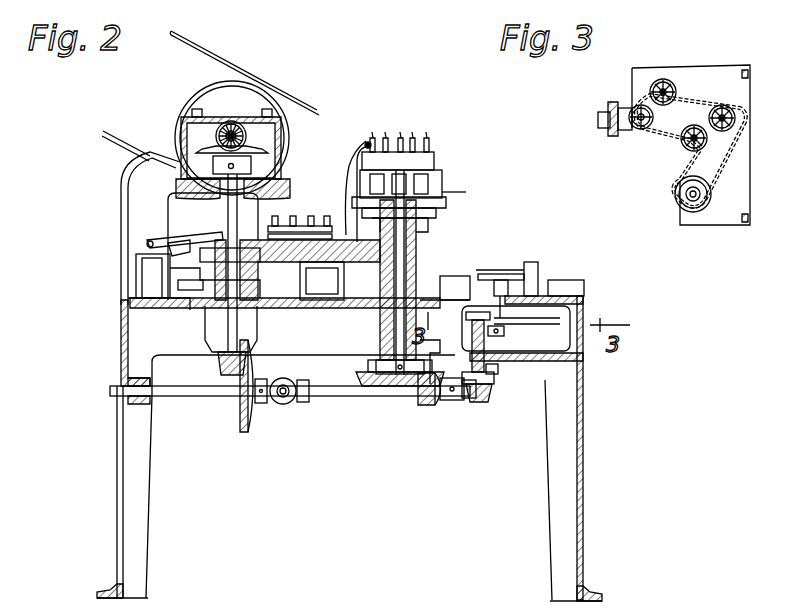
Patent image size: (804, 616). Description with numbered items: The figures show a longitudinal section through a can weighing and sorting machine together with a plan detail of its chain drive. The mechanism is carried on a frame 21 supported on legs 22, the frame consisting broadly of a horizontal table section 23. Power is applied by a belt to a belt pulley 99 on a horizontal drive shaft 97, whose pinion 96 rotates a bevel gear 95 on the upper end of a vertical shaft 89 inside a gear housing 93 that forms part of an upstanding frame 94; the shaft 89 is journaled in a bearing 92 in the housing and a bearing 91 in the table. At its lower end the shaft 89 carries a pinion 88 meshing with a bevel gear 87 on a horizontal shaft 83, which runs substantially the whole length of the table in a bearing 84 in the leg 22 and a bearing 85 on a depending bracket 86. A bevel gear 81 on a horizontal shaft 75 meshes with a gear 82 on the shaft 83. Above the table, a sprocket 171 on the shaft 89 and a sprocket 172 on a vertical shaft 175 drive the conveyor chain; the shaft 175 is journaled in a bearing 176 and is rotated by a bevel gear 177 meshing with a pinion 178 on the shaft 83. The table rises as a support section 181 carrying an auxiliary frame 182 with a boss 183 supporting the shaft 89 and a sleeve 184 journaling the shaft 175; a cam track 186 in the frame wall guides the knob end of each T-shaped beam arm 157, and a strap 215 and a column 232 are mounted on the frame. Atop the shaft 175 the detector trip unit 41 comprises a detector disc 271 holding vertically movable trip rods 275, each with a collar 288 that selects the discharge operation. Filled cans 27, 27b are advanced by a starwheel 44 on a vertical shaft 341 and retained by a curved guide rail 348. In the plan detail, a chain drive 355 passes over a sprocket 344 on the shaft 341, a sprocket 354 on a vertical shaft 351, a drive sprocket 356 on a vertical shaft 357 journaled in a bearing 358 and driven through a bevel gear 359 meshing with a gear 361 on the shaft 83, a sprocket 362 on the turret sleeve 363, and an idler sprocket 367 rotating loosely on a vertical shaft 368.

In FIG. 2, the belt pulley 99 is at (212, 86).
In FIG. 2, the horizontal drive shaft 97 is at (232, 128).
In FIG. 2, the pinion 96 is at (220, 135).
In FIG. 2, the bevel gear 95 is at (213, 164).
In FIG. 2, the gear housing 93 is at (280, 132).
In FIG. 2, the frame 94 is at (122, 178).
In FIG. 2, the bearing 92 is at (262, 188).
In FIG. 2, the vertical shaft 89 is at (226, 213).
In FIG. 2, the boss 183 is at (248, 245).
In FIG. 2, the strap 215 is at (312, 224).
In FIG. 2, the auxiliary frame 182 is at (336, 258).
In FIG. 2, the support section 181 is at (320, 282).
In FIG. 2, the horizontal table section 23 is at (350, 308).
In FIG. 2, the frame 21 is at (122, 338).
In FIG. 3, the frame 21 is at (648, 68).
In FIG. 2, the legs 22 is at (117, 492).
In FIG. 2, the T-shaped arm 157 is at (160, 246).
In FIG. 2, the filled can 27 is at (136, 268).
In FIG. 2, the sprocket 171 is at (208, 276).
In FIG. 2, the bearing 91 is at (222, 326).
In FIG. 2, the pinion 88 is at (218, 364).
In FIG. 2, the bevel gear 87 is at (240, 420).
In FIG. 2, the horizontal shaft 83 is at (190, 396).
In FIG. 2, the bearing 84 is at (140, 405).
In FIG. 2, the bevel gear 82 is at (300, 385).
In FIG. 2, the bevel gear 81 is at (276, 405).
In FIG. 2, the horizontal shaft 75 is at (283, 384).
In FIG. 2, the bearing 176 is at (384, 342).
In FIG. 2, the vertical shaft 175 is at (416, 213).
In FIG. 2, the sleeve 184 is at (416, 228).
In FIG. 2, the cam track 186 is at (418, 246).
In FIG. 2, the detector disc 271 is at (434, 162).
In FIG. 2, the trip rod 275 is at (404, 150).
In FIG. 2, the collar 288 is at (442, 180).
In FIG. 2, the column 232 is at (350, 146).
In FIG. 2, the detector trip unit 41 is at (400, 140).
In FIG. 2, the sprocket 172 is at (436, 294).
In FIG. 2, the starwheel 44 is at (484, 270).
In FIG. 2, the vertical shaft 341 is at (500, 272).
In FIG. 3, the vertical shaft 341 is at (666, 80).
In FIG. 2, the filled can 27b is at (538, 270).
In FIG. 2, the curved guide rail 348 is at (568, 280).
In FIG. 2, the third drive sprocket 356 is at (478, 318).
In FIG. 3, the third drive sprocket 356 is at (644, 130).
In FIG. 2, the vertical shaft 357 is at (492, 362).
In FIG. 3, the vertical shaft 357 is at (636, 126).
In FIG. 2, the bearing 358 is at (494, 376).
In FIG. 2, the bevel gear 359 is at (482, 400).
In FIG. 2, the bracket 86 is at (446, 366).
In FIG. 3, the bracket 86 is at (612, 102).
In FIG. 2, the bevel gear 177 is at (374, 386).
In FIG. 2, the pinion 178 is at (420, 400).
In FIG. 2, the bearing 85 is at (448, 402).
In FIG. 2, the bevel gear 361 is at (470, 404).
In FIG. 3, the chain drive 355 is at (728, 158).
In FIG. 3, the sprocket 344 is at (670, 100).
In FIG. 3, the sprocket 354 is at (684, 140).
In FIG. 3, the vertical shaft 351 is at (686, 150).
In FIG. 3, the vertical shaft 368 is at (732, 112).
In FIG. 3, the idler sprocket 367 is at (720, 104).
In FIG. 3, the sleeve 363 is at (680, 204).
In FIG. 3, the sprocket 362 is at (676, 188).